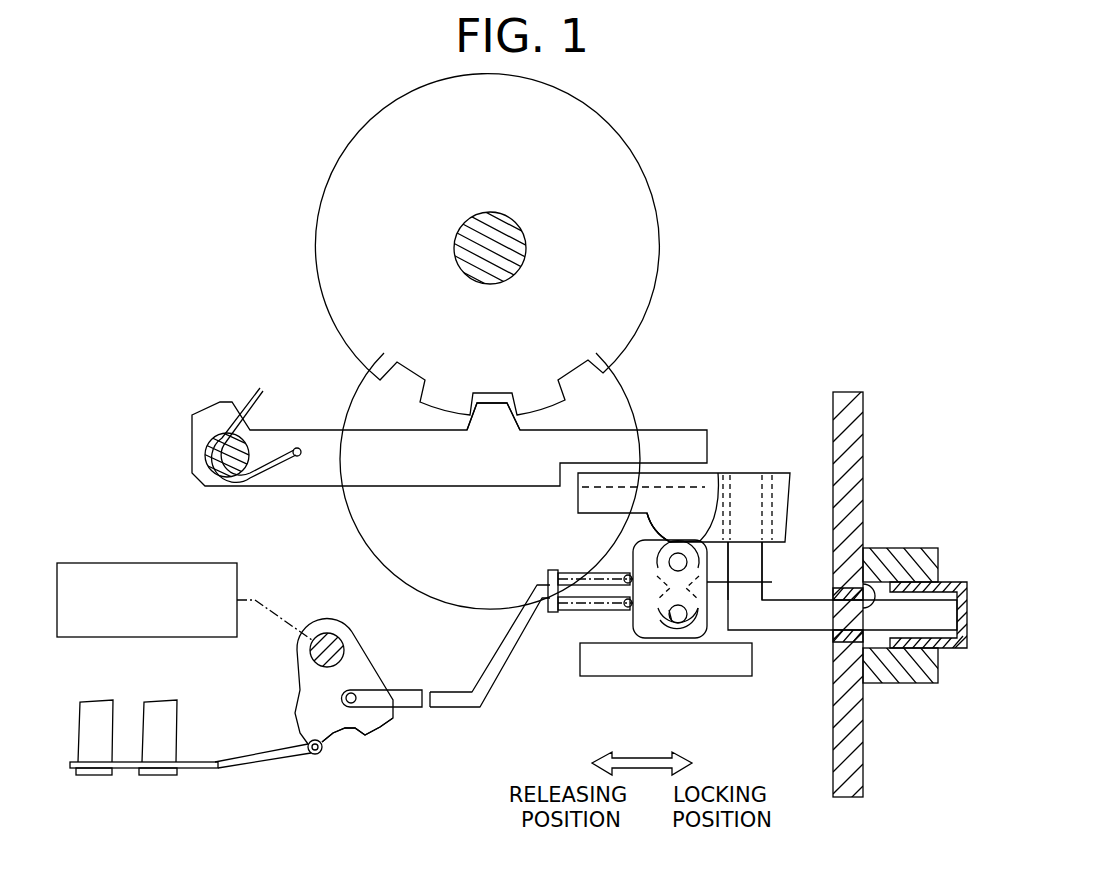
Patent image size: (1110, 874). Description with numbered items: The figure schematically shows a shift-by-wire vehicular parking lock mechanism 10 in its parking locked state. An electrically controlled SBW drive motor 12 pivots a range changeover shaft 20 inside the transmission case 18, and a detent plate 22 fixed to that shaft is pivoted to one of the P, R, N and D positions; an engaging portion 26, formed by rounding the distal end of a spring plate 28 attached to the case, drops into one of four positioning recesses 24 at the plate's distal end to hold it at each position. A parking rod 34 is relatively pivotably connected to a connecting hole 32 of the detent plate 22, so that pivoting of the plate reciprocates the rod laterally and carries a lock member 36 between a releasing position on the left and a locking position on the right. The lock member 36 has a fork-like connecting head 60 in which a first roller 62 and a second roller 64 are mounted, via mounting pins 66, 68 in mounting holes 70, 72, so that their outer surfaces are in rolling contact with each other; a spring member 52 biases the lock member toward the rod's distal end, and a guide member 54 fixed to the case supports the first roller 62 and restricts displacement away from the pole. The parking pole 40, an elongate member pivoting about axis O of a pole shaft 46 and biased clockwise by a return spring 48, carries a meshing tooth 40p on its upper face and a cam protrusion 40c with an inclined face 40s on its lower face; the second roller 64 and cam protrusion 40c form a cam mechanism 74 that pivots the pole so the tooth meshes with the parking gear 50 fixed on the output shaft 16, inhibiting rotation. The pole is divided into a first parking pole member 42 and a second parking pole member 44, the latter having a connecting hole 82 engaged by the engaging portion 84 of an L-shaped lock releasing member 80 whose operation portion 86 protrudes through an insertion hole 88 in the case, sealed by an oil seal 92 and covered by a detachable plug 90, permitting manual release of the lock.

The vehicular parking lock mechanism 10 is at (801, 168).
The SBW drive motor 12 is at (102, 562).
The output shaft 16 is at (497, 240).
The transmission case 18 is at (856, 452).
The range changeover shaft 20 is at (322, 636).
The detent plate 22 is at (357, 668).
The positioning recesses 24 is at (388, 714).
The engaging portion 26 is at (316, 760).
The spring plate 28 is at (213, 769).
The connecting hole 32 is at (343, 692).
The parking rod 34 is at (497, 657).
The lock member 36 is at (716, 640).
The parking pole 40 is at (730, 355).
The inclined face 40s is at (643, 522).
The cam protrusion 40c is at (677, 527).
The meshing tooth 40p is at (488, 418).
The first parking pole member 42 is at (402, 470).
The second parking pole member 44 is at (598, 497).
The pole shaft 46 is at (242, 478).
The return spring 48 is at (222, 412).
The parking gear 50 is at (398, 120).
The spring member 52 is at (562, 572).
The guide member 54 is at (593, 657).
The connecting head 60 is at (633, 622).
The first roller 62 is at (691, 642).
The second roller 64 is at (716, 470).
The mounting pin 66 is at (664, 633).
The mounting pin 68 is at (754, 582).
The mounting hole 70 is at (673, 642).
The mounting hole 72 is at (656, 553).
The cam mechanism 74 is at (632, 534).
The lock releasing member 80 is at (778, 652).
The connecting hole 82 is at (758, 480).
The engaging portion 84 is at (752, 563).
The operation portion 86 is at (905, 660).
The insertion hole 88 is at (870, 595).
The plug 90 is at (935, 582).
The oil seal 92 is at (836, 633).